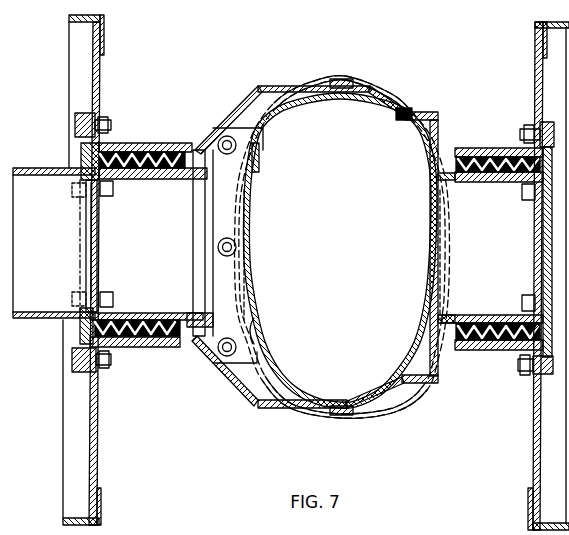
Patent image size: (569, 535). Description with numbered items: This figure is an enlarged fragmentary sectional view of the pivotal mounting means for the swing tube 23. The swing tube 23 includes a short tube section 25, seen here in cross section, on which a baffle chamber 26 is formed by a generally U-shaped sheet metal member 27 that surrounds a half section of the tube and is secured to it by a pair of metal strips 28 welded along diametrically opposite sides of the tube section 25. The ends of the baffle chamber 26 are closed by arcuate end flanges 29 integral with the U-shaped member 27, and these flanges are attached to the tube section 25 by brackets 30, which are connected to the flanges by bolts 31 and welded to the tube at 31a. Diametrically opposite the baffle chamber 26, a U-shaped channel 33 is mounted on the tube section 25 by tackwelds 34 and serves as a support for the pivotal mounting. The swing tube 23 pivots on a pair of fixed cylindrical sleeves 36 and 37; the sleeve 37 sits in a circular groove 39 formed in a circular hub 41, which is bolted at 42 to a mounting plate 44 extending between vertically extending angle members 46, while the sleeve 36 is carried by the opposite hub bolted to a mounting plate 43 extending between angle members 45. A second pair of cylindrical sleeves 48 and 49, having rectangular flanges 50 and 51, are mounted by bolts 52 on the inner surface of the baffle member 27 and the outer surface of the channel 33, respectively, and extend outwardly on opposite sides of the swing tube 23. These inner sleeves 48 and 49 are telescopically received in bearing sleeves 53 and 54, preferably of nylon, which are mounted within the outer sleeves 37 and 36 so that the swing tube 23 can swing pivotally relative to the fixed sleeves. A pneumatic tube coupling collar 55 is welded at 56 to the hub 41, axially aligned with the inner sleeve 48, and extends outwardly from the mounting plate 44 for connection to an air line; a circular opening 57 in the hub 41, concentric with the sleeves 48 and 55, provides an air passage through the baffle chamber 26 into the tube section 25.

The swing tube 23 is at (399, 418).
The tube section 25 is at (282, 108).
The baffle chamber 26 is at (237, 390).
The U-shaped sheet metal member 27 is at (243, 406).
The metal strips 28 is at (346, 82).
The arcuate end flanges 29 is at (250, 113).
The brackets 30 is at (246, 193).
The bolts 31 is at (236, 246).
The weld 31a is at (256, 322).
The U-shaped channel 33 is at (440, 130).
The tackwelds 34 is at (404, 113).
The cylindrical sleeve 36 is at (484, 148).
The cylindrical sleeve 37 is at (133, 143).
The circular groove 39 is at (84, 150).
The circular hub 41 is at (80, 374).
The bolts 42 is at (77, 119).
The mounting plate 43 is at (533, 440).
The mounting plate 44 is at (97, 440).
The angle members 45 is at (538, 21).
The angle members 46 is at (75, 15).
The cylindrical sleeve 48 is at (155, 179).
The cylindrical sleeve 49 is at (487, 184).
The rectangular flange 50 is at (215, 348).
The rectangular flange 51 is at (439, 342).
The bolts 52 is at (450, 190).
The bearing sleeve 53 is at (163, 145).
The bearing sleeve 54 is at (509, 152).
The pneumatic tube coupling collar 55 is at (20, 320).
The weld 56 is at (74, 330).
The circular opening 57 is at (92, 184).